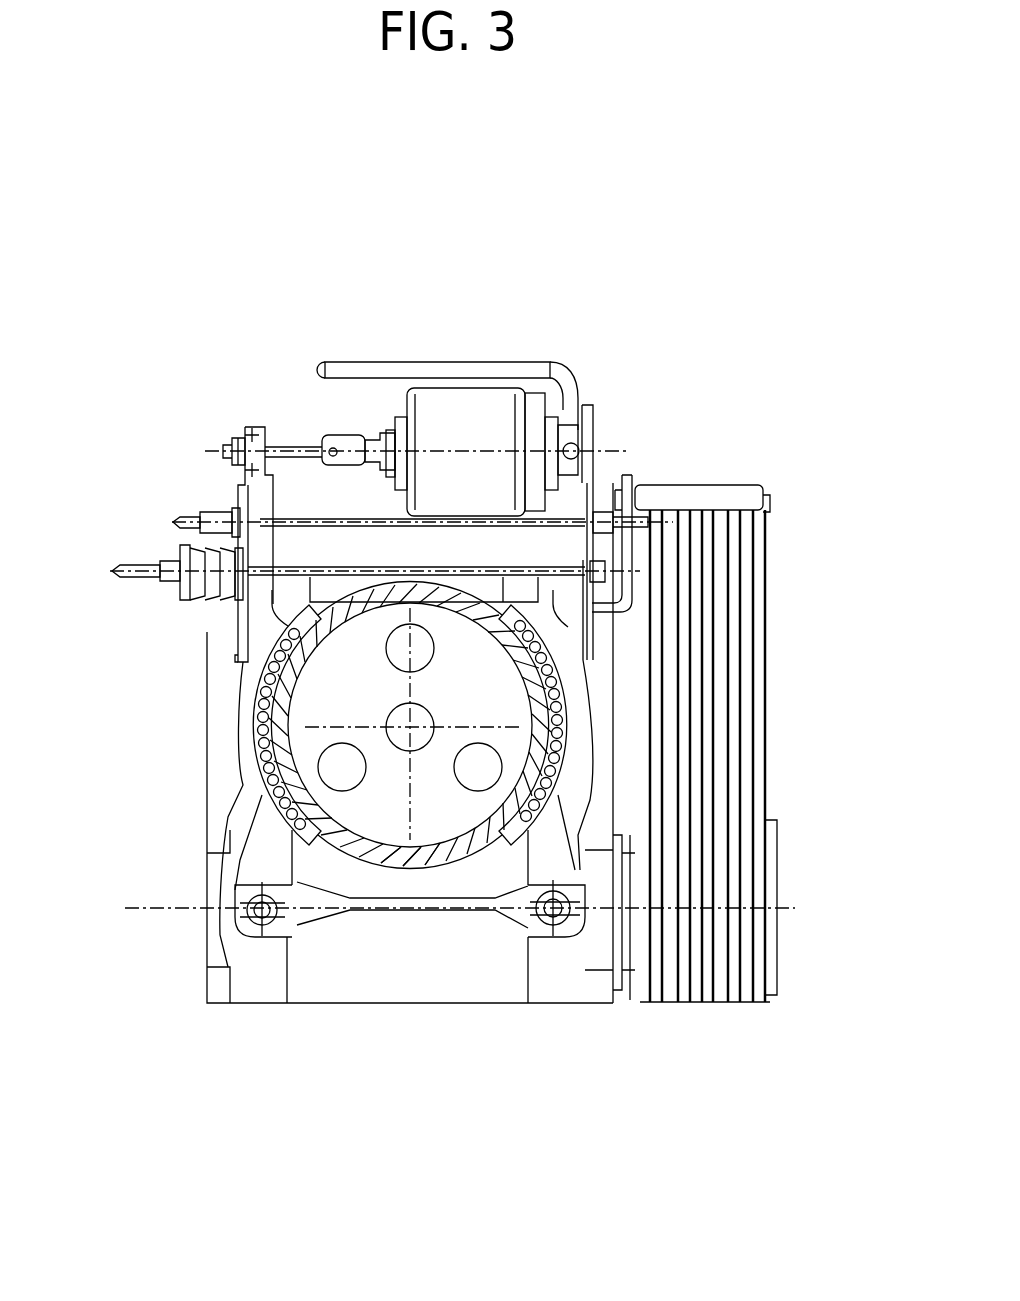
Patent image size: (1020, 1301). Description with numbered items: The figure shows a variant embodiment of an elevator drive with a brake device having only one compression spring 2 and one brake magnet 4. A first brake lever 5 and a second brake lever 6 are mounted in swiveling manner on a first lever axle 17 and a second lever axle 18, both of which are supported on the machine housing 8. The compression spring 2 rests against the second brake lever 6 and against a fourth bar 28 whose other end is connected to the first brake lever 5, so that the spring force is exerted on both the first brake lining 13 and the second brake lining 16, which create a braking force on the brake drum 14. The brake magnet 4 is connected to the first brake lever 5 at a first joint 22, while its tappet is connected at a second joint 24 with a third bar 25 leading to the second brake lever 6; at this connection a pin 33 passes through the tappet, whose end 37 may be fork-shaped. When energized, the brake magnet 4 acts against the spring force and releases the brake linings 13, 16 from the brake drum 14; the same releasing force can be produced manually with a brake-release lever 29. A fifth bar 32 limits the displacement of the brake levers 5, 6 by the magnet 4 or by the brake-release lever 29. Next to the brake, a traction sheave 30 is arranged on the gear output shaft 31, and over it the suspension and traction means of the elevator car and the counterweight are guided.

The first compression spring 2 is at (208, 590).
The brake magnet 4 is at (463, 437).
The first brake lever 5 is at (578, 689).
The second brake lever 6 is at (243, 703).
The machine housing 8 is at (255, 985).
The first brake lining 13 is at (563, 742).
The brake drum 14 is at (415, 857).
The second brake lining 16 is at (243, 772).
The first lever axle 17 is at (565, 935).
The second lever axle 18 is at (250, 912).
The first joint 22 is at (583, 443).
The second joint 24 is at (326, 416).
The third bar 25 is at (291, 443).
The fourth bar 28 is at (147, 577).
The brake-release lever 29 is at (557, 375).
The traction sheave 30 is at (748, 540).
The gear output shaft 31 is at (632, 945).
The fifth bar 32 is at (190, 520).
The pin 33 is at (303, 437).
The end of the brake-magnet tappet 37 is at (370, 435).